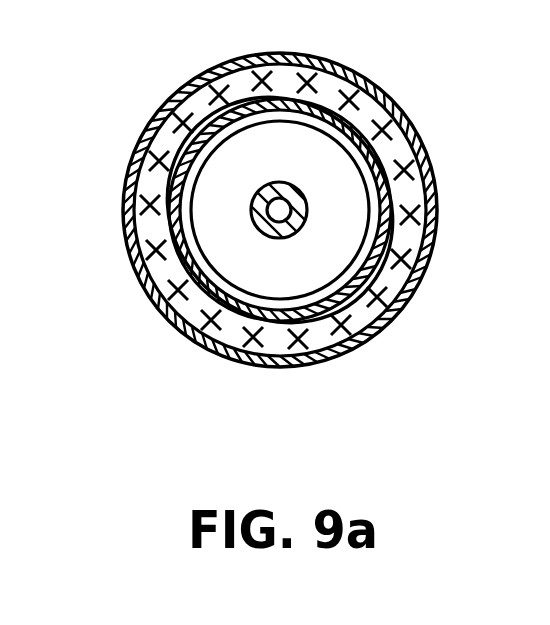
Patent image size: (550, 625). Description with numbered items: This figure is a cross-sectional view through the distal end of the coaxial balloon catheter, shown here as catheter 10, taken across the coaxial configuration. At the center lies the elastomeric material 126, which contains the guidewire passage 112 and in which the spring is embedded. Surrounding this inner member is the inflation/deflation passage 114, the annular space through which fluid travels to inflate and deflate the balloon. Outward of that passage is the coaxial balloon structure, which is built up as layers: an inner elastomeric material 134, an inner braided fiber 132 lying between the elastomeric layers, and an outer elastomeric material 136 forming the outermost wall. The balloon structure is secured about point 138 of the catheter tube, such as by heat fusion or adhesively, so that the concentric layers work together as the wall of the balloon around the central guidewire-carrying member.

The catheter 10 is at (162, 312).
The guidewire passage 112 is at (273, 209).
The inflation/deflation passage 114 is at (215, 207).
The elastomeric material 126 is at (273, 186).
The inner braided fiber 132 is at (413, 205).
The inner elastomeric material 134 is at (384, 244).
The outer elastomeric material 136 is at (390, 105).
The point of the tube 138 is at (333, 290).